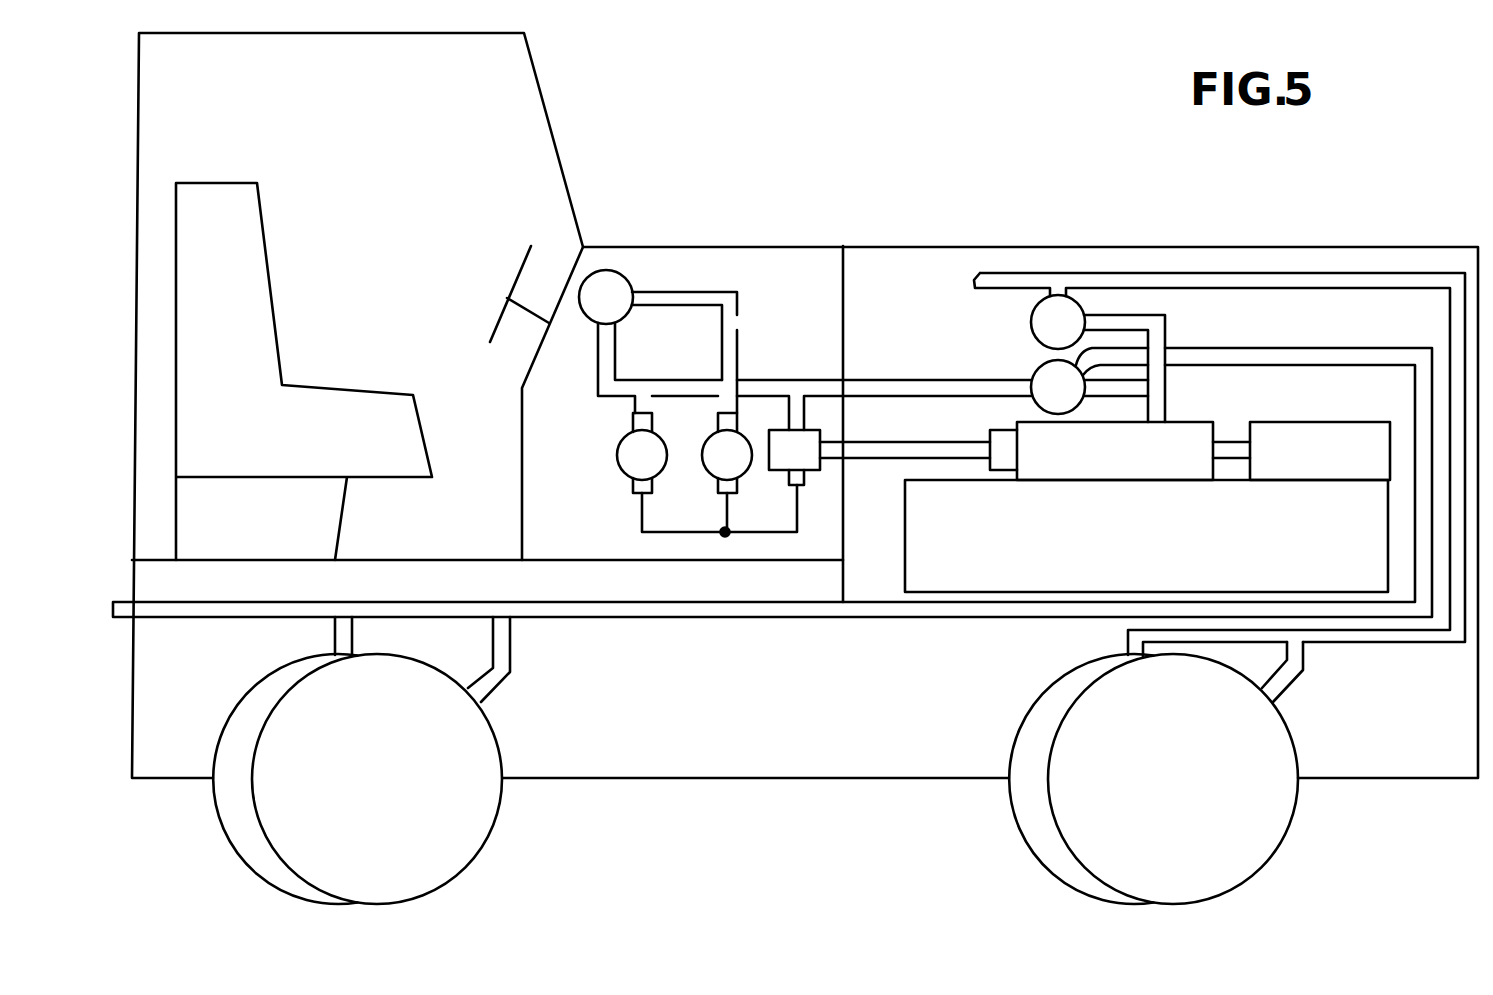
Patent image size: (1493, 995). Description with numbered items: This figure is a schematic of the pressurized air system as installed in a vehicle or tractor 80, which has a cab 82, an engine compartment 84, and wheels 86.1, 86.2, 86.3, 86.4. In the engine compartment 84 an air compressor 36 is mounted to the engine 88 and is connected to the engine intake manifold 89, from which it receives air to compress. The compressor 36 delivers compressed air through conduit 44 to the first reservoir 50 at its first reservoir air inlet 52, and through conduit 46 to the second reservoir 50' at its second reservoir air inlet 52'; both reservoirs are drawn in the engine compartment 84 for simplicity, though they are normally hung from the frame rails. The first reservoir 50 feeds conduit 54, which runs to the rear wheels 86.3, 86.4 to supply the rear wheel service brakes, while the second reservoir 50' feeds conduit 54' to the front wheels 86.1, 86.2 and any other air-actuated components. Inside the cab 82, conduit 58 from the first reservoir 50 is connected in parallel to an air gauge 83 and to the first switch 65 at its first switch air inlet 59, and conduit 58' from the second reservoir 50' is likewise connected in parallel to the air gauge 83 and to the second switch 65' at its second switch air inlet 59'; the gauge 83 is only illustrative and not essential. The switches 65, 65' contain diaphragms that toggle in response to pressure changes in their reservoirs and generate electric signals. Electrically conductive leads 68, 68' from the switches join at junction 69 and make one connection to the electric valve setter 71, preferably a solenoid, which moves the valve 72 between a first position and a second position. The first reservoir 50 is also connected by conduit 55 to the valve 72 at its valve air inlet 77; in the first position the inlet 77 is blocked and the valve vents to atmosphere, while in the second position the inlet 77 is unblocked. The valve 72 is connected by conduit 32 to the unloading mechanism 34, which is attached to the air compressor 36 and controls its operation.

The conduit 32 is at (888, 460).
The unloading mechanism 34 is at (990, 480).
The air compressor 36 is at (1205, 421).
The conduit 44 is at (1135, 312).
The conduit 46 is at (1136, 348).
The first reservoir 50 is at (1044, 395).
The second reservoir 50' is at (1041, 270).
The first reservoir air inlet 52 is at (1138, 278).
The second reservoir air inlet 52' is at (1103, 275).
The conduit 54 is at (772, 456).
The conduit 54' is at (1219, 447).
The conduit 55 is at (805, 408).
The conduit 58 is at (635, 368).
The conduit 58' is at (684, 352).
The first switch air inlet 59 is at (597, 416).
The second switch air inlet 59' is at (678, 380).
The first switch 65 is at (601, 461).
The second switch 65' is at (703, 478).
The electrically conductive lead 68 is at (639, 512).
The electrically conductive lead 68' is at (756, 512).
The junction 69 is at (724, 537).
The electric valve setter 71 is at (807, 472).
The valve 72 is at (820, 471).
The valve air inlet 77 is at (788, 431).
The vehicle 80 is at (892, 112).
The cab 82 is at (776, 258).
The air gauge 83 is at (628, 281).
The engine compartment 84 is at (900, 258).
The front wheel 86.1 is at (1288, 830).
The front wheel 86.2 is at (1022, 831).
The rear wheel 86.3 is at (491, 831).
The rear wheel 86.4 is at (227, 831).
The engine 88 is at (1352, 570).
The engine intake manifold 89 is at (1335, 421).